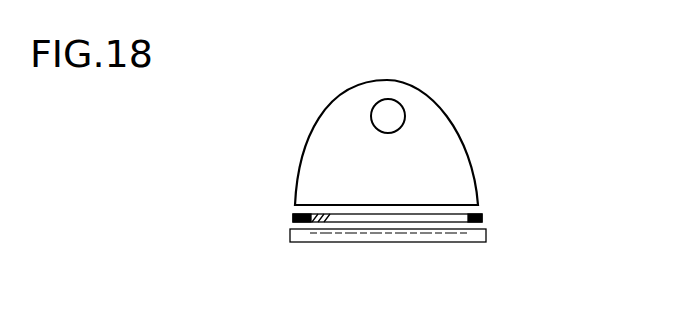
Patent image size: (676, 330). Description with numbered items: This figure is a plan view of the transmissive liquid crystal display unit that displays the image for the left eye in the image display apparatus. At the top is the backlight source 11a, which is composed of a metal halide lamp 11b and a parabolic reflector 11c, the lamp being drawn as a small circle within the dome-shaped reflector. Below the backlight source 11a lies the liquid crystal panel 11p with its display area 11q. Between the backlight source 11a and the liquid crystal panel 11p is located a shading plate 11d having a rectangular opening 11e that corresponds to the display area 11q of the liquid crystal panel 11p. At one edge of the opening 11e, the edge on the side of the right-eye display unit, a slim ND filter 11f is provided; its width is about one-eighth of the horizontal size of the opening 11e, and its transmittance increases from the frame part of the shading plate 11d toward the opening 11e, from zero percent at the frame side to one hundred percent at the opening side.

The backlight source 11a is at (440, 142).
The metal halide lamp 11b is at (405, 113).
The parabolic reflector 11c is at (468, 155).
The shading plate 11d is at (480, 220).
The rectangular opening 11e is at (382, 216).
The ND filter 11f is at (321, 222).
The liquid crystal panel 11p is at (487, 233).
The display area 11q is at (452, 236).